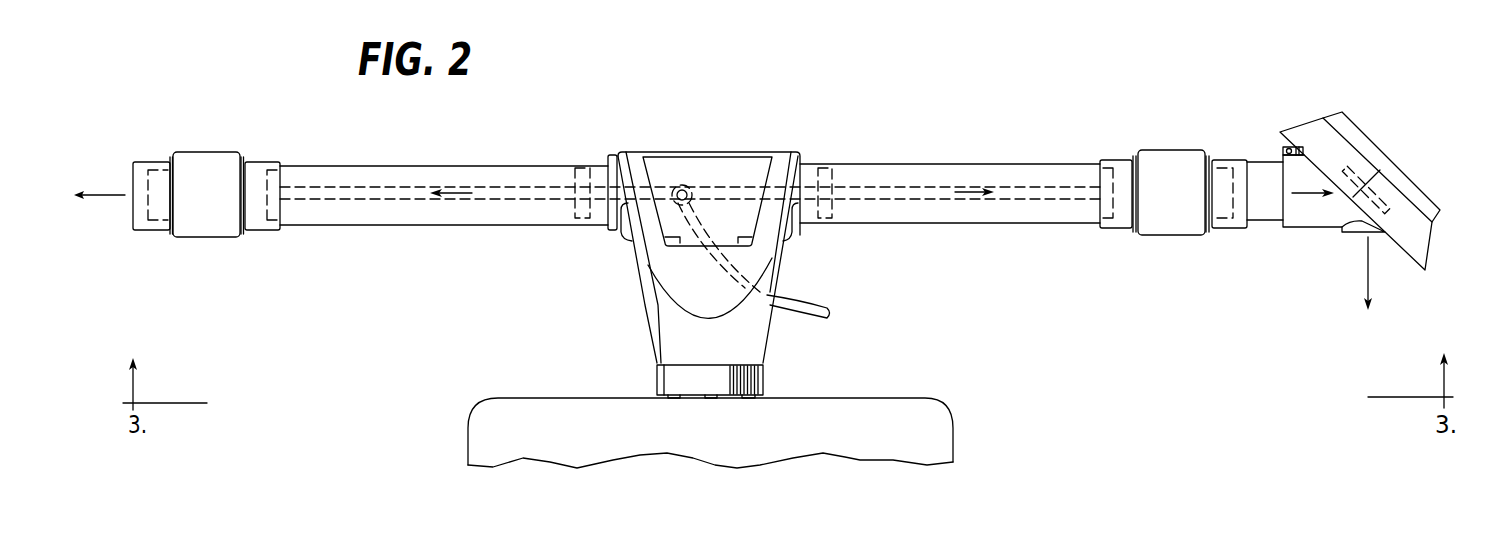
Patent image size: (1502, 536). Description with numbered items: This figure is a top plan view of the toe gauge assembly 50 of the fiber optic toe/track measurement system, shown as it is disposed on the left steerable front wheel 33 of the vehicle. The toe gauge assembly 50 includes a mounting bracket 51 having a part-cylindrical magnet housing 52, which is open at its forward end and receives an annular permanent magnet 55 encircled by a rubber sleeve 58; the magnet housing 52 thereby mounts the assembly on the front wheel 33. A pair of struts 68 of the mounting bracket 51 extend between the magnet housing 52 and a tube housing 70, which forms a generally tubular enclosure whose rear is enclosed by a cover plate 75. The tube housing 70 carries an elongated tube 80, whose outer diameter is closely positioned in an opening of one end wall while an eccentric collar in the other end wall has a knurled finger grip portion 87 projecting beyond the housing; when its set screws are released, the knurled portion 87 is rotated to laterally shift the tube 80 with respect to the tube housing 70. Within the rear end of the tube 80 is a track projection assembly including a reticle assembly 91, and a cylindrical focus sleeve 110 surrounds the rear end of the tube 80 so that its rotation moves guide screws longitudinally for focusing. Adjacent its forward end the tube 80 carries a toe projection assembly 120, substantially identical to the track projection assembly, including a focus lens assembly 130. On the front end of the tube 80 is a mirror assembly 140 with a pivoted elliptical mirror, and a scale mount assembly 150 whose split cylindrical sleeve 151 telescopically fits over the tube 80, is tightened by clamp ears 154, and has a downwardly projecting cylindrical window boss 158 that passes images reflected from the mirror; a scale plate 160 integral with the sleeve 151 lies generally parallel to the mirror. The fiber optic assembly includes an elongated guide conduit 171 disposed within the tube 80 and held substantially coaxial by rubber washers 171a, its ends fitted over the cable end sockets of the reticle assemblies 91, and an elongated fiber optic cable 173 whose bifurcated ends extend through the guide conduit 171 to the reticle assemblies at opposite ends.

The steerable front wheel 33 is at (928, 415).
The toe gauge assembly 50 is at (985, 97).
The mounting bracket 51 is at (703, 253).
The magnet housing 52 is at (675, 340).
The annular permanent magnet 55 is at (765, 394).
The rubber sleeve 58 is at (680, 378).
The struts 68 is at (650, 268).
The tube housing 70 is at (795, 242).
The cover plate 75 is at (708, 150).
The tube 80 is at (437, 166).
The knurled finger grip portion 87 is at (608, 158).
The reticle assembly 91 is at (267, 237).
The focus sleeve 110 is at (216, 194).
The toe projection assembly 120 is at (1142, 201).
The focus lens assembly 130 is at (1225, 228).
The mirror assembly 140 is at (1387, 198).
The scale mount assembly 150 is at (1342, 179).
The split cylindrical sleeve 151 is at (1308, 215).
The clamp ears 154 is at (1284, 147).
The cylindrical window boss 158 is at (1358, 229).
The scale plate 160 is at (1430, 260).
The guide conduit 171 is at (892, 185).
The rubber washers 171a is at (573, 172).
The fiber optic cable 173 is at (802, 310).